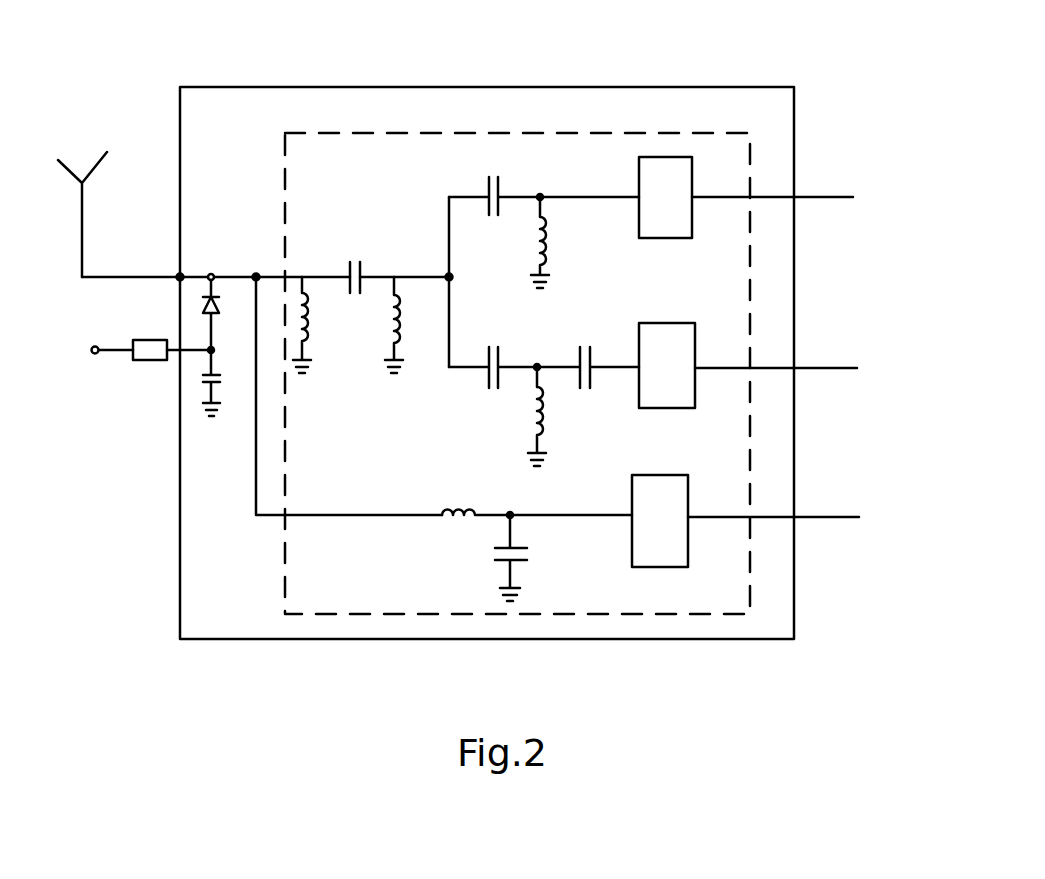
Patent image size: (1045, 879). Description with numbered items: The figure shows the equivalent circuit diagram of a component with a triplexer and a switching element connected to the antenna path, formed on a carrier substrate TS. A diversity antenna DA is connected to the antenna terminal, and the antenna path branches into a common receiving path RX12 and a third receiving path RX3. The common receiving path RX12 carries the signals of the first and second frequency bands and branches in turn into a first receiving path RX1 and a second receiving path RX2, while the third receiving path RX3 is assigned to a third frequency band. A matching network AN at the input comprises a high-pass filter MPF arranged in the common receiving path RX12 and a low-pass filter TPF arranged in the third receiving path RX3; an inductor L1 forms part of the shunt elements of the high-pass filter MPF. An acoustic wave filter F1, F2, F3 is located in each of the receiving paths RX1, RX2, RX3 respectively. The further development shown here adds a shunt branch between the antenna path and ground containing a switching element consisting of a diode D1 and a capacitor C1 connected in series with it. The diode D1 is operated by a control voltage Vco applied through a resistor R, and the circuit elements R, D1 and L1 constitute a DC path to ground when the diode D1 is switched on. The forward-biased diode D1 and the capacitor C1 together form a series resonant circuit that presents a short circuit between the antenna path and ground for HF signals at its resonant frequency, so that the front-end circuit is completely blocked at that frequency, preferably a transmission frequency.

The carrier substrate TS is at (745, 87).
The matching network at the input AN is at (752, 611).
The diversity antenna DA is at (178, 277).
The diode D1 is at (222, 308).
The control voltage Vco is at (92, 351).
The resistor R is at (150, 339).
The capacitor C1 is at (196, 379).
The inductor L1 is at (328, 325).
The high-pass filter MPF is at (348, 350).
The common receiving path RX12 is at (420, 276).
The acoustic wave filter F1 is at (682, 157).
The acoustic wave filter F2 is at (674, 323).
The acoustic wave filter F3 is at (674, 477).
The first receiving path RX1 is at (812, 195).
The second receiving path RX2 is at (812, 366).
The third receiving path RX3 is at (818, 516).
The low-pass filter TPF is at (470, 548).